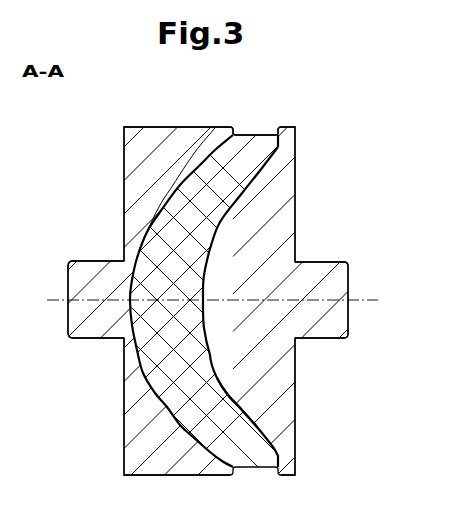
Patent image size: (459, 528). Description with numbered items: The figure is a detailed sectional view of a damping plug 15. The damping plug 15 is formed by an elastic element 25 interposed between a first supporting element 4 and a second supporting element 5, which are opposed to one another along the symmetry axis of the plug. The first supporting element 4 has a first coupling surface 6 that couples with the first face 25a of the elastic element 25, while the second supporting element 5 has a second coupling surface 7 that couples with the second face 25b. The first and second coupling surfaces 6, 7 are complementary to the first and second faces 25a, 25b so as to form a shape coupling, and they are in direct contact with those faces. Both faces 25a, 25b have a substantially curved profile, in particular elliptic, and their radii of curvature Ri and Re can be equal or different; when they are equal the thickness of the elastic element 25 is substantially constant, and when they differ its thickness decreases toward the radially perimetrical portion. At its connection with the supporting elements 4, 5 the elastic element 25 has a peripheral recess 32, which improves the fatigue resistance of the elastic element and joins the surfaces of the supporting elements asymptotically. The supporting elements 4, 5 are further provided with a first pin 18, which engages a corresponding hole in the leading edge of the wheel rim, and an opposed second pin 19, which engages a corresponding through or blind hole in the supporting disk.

The damping plug 15 is at (342, 122).
The first supporting element 4 is at (137, 158).
The second supporting element 5 is at (283, 372).
The first coupling surface 6 is at (152, 393).
The second coupling surface 7 is at (241, 198).
The first pin 18 is at (83, 273).
The second pin 19 is at (330, 322).
The elastic element 25 is at (243, 170).
The first face 25a is at (139, 227).
The second face 25b is at (230, 397).
The peripheral recess 32 is at (257, 137).
The radius of curvature Ri is at (222, 223).
The radius of curvature Re is at (373, 297).